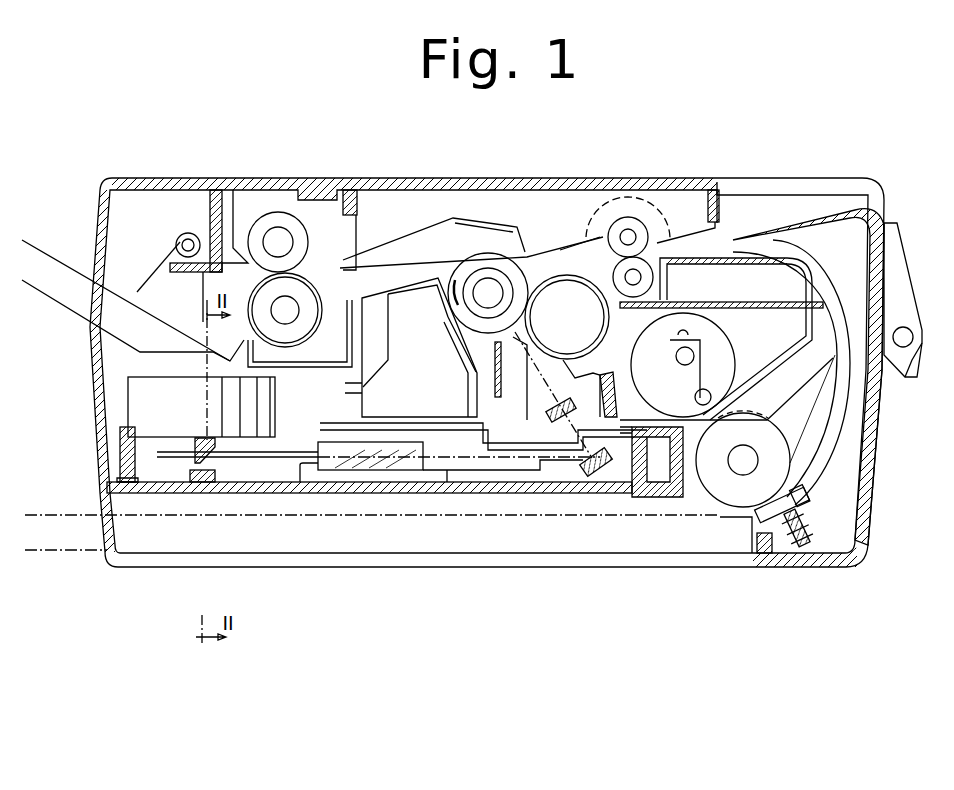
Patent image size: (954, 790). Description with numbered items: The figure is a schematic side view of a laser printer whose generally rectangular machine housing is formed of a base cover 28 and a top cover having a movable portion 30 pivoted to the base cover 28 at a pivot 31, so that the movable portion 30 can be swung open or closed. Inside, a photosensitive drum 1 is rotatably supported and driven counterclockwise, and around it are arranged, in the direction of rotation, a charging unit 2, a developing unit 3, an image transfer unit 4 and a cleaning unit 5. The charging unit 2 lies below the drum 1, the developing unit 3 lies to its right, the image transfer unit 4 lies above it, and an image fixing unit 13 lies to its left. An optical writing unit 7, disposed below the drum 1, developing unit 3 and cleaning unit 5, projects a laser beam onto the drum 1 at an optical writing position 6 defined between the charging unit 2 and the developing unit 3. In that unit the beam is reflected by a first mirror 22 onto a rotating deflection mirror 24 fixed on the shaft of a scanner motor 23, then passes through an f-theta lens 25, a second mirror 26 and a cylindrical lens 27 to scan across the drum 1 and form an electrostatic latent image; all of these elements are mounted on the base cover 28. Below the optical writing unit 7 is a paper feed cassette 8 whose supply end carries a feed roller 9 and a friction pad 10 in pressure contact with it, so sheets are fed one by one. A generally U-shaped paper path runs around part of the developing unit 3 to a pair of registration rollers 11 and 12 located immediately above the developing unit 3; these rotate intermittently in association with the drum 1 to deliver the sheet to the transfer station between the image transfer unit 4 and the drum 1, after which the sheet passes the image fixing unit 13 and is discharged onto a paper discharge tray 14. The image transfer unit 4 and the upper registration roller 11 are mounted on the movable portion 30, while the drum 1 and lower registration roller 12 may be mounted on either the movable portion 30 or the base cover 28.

The photosensitive drum 1 is at (515, 275).
The charging unit 2 is at (493, 388).
The developing unit 3 is at (740, 290).
The image transfer unit 4 is at (487, 222).
The cleaning unit 5 is at (410, 359).
The optical writing position 6 is at (512, 330).
The optical writing unit 7 is at (475, 467).
The paper feed cassette 8 is at (698, 547).
The feed roller 9 is at (787, 440).
The friction pad 10 is at (800, 502).
The upper registration roller 11 is at (645, 235).
The lower registration roller 12 is at (655, 277).
The image fixing unit 13 is at (280, 205).
The paper discharge tray 14 is at (125, 290).
The first mirror 22 is at (198, 478).
The scanner motor 23 is at (128, 403).
The deflection mirror 24 is at (195, 452).
The f-theta lens 25 is at (335, 432).
The second mirror 26 is at (602, 480).
The cylindrical lens 27 is at (560, 420).
The base cover 28 is at (877, 465).
The movable portion of the top cover 30 is at (650, 180).
The pivot 31 is at (905, 333).